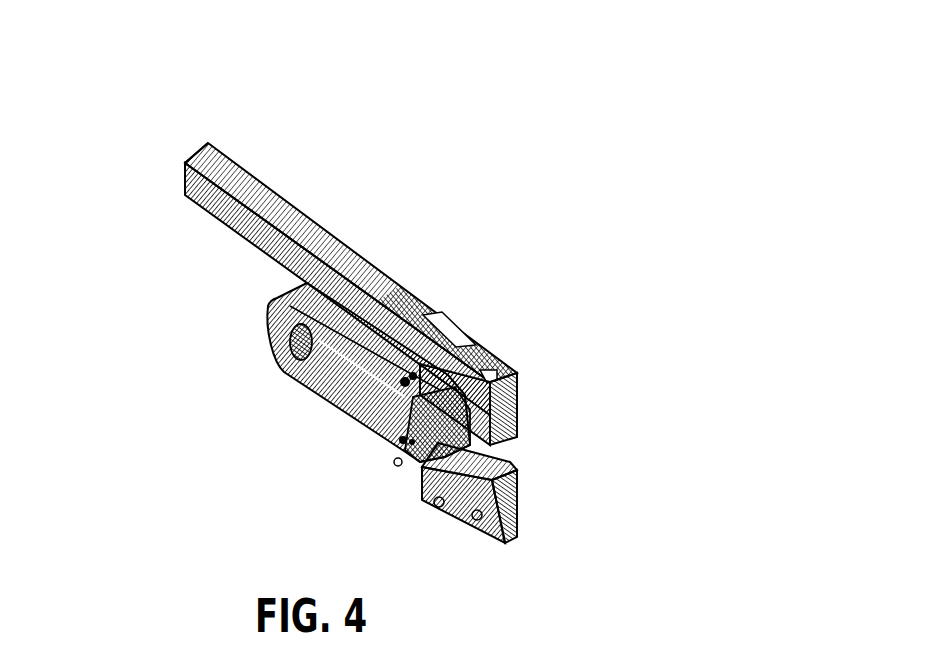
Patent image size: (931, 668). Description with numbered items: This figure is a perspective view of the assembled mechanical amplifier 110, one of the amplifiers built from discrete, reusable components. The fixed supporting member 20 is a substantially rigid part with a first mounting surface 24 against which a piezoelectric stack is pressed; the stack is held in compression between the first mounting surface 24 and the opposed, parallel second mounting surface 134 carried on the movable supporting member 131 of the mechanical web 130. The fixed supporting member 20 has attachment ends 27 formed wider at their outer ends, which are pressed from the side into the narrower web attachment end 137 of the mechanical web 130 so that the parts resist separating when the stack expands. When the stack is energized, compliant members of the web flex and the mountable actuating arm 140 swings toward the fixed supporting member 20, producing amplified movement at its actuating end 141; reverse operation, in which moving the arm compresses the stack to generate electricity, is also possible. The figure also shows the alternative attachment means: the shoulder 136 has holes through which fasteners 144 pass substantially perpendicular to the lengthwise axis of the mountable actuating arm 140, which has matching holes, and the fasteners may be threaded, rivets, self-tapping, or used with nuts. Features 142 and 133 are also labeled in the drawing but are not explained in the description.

The mechanical amplifier 110 is at (560, 132).
The mountable actuating arm 140 is at (318, 223).
The actuating end 141 is at (183, 171).
The slot 142 is at (483, 362).
The fasteners 144 is at (458, 377).
The shoulder 136 is at (512, 362).
The fixed supporting member 20 is at (264, 319).
The first mounting surface 24 is at (305, 368).
The second mounting surface 134 is at (413, 409).
The attachment ends 27 is at (405, 382).
The web attachment end 137 is at (413, 380).
The mechanical web 130 is at (505, 460).
The movable supporting member 131 is at (396, 455).
The fasteners 133 is at (438, 507).